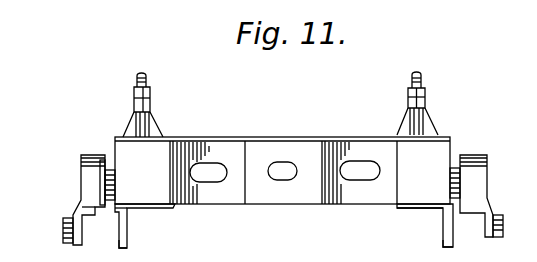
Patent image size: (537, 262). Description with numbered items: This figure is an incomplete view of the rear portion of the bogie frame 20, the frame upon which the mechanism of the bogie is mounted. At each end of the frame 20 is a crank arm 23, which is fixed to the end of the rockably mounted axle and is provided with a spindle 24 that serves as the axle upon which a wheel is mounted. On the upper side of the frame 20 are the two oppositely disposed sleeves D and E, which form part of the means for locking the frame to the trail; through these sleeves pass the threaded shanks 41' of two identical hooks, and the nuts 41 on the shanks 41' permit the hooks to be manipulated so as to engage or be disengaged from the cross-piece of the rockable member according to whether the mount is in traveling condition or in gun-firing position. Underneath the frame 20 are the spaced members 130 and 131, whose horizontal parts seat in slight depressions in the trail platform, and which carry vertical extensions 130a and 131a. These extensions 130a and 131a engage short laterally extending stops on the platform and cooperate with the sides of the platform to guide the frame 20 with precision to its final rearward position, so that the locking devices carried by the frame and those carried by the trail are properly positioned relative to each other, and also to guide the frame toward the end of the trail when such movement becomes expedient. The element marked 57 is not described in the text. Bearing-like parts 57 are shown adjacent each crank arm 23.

The frame 20 is at (300, 134).
The crank arm 23 is at (79, 213).
The spindle 24 is at (64, 229).
The nut 41 is at (151, 112).
The threaded shank 41' is at (158, 79).
The hub 57 is at (115, 181).
The spaced member 130 is at (428, 210).
The vertical extension 130a is at (451, 243).
The spaced member 131 is at (158, 210).
The vertical extension 131a is at (123, 244).
The sleeve D is at (158, 125).
The sleeve E is at (436, 123).